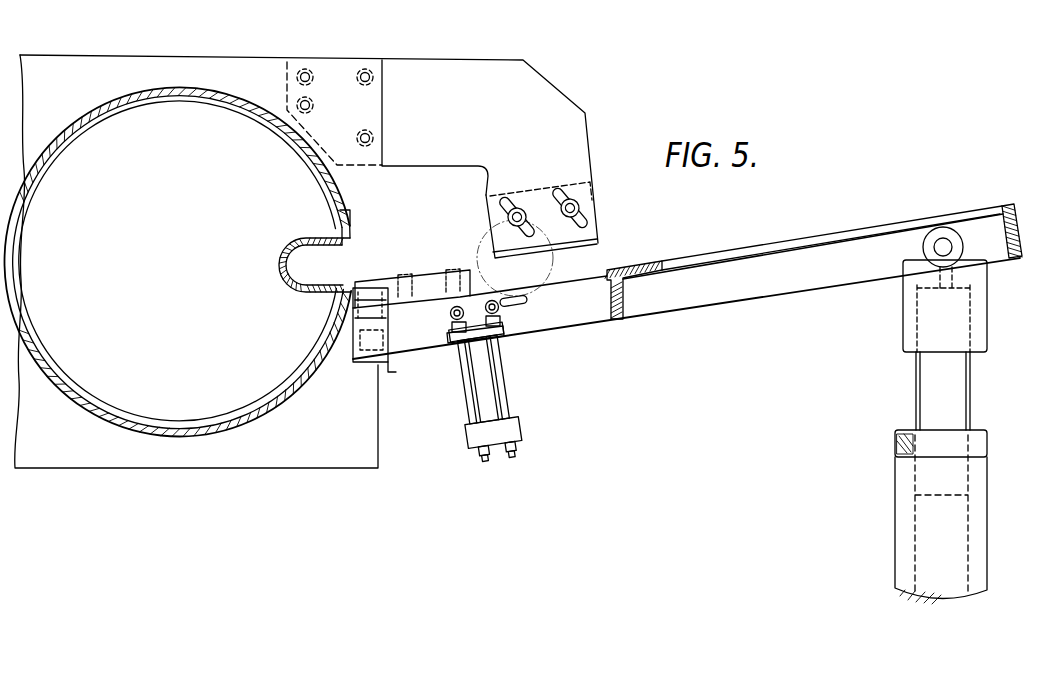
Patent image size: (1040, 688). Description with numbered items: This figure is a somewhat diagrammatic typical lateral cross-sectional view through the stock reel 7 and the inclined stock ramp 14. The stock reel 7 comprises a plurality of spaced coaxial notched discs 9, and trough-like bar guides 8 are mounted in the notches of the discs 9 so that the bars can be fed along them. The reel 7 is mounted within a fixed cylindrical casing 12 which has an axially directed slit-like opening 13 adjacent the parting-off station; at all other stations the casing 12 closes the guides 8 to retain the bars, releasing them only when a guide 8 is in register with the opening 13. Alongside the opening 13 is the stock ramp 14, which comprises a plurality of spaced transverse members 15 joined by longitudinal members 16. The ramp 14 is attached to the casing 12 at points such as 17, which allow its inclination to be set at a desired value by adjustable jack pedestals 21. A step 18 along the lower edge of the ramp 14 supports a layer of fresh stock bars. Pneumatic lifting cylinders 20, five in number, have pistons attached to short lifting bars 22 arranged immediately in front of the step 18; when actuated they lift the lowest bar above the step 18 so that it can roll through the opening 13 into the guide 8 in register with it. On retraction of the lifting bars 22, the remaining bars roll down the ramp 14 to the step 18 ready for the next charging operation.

The stock reel 7 is at (232, 393).
The bar guides 8 is at (306, 281).
The notched discs 9 is at (313, 222).
The cylindrical casing 12 is at (282, 405).
The slit-like opening 13 is at (347, 236).
The stock ramp 14 is at (692, 249).
The transverse members 15 is at (791, 282).
The longitudinal members 16 is at (617, 307).
The attachment points 17 is at (362, 350).
The step 18 is at (473, 257).
The pneumatic lifting cylinders 20 is at (493, 403).
The adjustable jack pedestals 21 is at (925, 390).
The lifting bars 22 is at (480, 298).